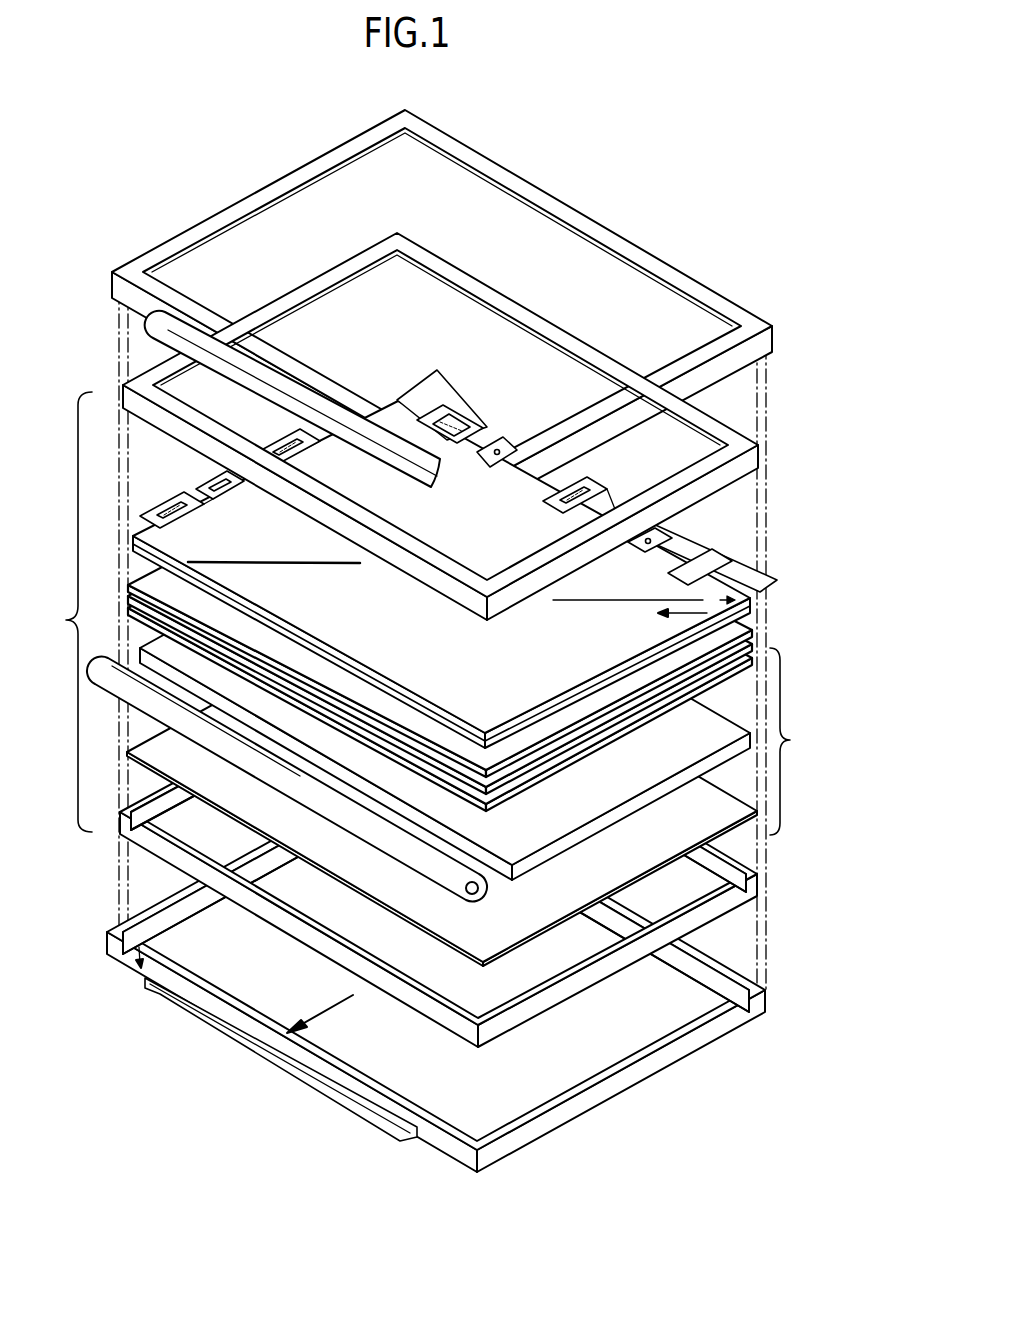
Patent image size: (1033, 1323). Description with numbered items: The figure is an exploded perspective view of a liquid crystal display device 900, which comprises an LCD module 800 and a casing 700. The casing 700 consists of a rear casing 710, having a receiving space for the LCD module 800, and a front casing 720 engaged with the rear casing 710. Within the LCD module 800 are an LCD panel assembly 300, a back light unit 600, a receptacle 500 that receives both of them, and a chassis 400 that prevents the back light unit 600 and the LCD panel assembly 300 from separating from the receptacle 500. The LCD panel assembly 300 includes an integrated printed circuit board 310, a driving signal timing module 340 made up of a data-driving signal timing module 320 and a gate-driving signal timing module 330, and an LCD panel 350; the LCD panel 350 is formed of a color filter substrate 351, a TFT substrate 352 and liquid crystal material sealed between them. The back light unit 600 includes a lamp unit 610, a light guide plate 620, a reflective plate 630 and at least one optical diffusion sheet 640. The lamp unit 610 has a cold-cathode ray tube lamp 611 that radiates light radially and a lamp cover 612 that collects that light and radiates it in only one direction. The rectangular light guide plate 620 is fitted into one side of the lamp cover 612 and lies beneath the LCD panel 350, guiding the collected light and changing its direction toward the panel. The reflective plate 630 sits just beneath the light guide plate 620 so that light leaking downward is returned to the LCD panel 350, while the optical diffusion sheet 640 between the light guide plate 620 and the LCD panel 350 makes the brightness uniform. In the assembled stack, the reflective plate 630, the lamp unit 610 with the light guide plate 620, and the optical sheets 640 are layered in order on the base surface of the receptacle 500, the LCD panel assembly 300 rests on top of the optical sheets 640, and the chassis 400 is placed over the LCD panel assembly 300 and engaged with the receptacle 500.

The LCD panel assembly 300 is at (483, 539).
The integrated printed circuit board 310 is at (441, 387).
The data-driving signal timing module 320 is at (468, 398).
The gate-driving signal timing module 330 is at (172, 500).
The driving signal timing module 340 is at (272, 432).
The LCD panel 350 is at (664, 587).
The color filter substrate 351 is at (703, 533).
The TFT substrate 352 is at (663, 593).
The chassis 400 is at (748, 434).
The receptacle 500 is at (758, 886).
The back light unit 600 is at (453, 746).
The lamp unit 610 is at (319, 790).
The cold-cathode ray tube lamp 611 is at (481, 885).
The lamp cover 612 is at (400, 848).
The light guide plate 620 is at (574, 830).
The reflective plate 630 is at (585, 910).
The optical diffusion sheet 640 is at (133, 580).
The casing 700 is at (426, 641).
The rear casing 710 is at (654, 1081).
The front casing 720 is at (534, 186).
The LCD module 800 is at (58, 612).
The LCD device 900 is at (660, 188).